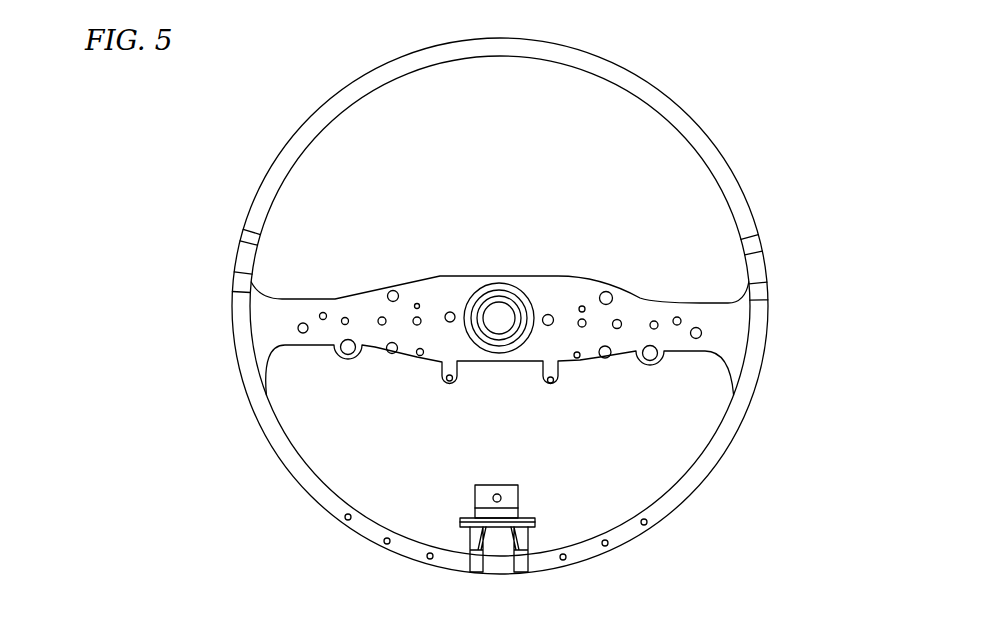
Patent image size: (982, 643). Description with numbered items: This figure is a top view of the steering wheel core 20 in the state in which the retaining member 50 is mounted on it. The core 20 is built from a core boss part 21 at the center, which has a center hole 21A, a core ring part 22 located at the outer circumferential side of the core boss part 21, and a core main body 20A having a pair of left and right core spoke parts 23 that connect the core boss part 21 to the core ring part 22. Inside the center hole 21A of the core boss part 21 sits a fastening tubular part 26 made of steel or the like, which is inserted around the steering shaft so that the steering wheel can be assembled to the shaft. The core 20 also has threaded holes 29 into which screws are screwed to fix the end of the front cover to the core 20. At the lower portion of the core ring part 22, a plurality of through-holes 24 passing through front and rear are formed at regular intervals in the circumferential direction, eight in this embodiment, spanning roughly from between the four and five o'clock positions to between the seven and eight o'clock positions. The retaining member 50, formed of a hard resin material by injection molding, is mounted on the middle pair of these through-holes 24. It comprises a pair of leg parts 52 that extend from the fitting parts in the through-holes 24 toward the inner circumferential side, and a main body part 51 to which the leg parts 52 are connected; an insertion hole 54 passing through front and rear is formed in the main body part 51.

The core 20 is at (670, 85).
The core main body 20A is at (413, 277).
The core boss part 21 is at (489, 289).
The center hole 21A is at (497, 331).
The core ring part 22 is at (766, 344).
The core spoke parts 23 is at (350, 305).
The through-holes 24 is at (429, 559).
The fastening tubular part 26 is at (507, 297).
The threaded holes 29 is at (420, 358).
The retaining member 50 is at (522, 474).
The main body part 51 is at (475, 498).
The leg parts 52 is at (465, 556).
The insertion hole 54 is at (497, 493).